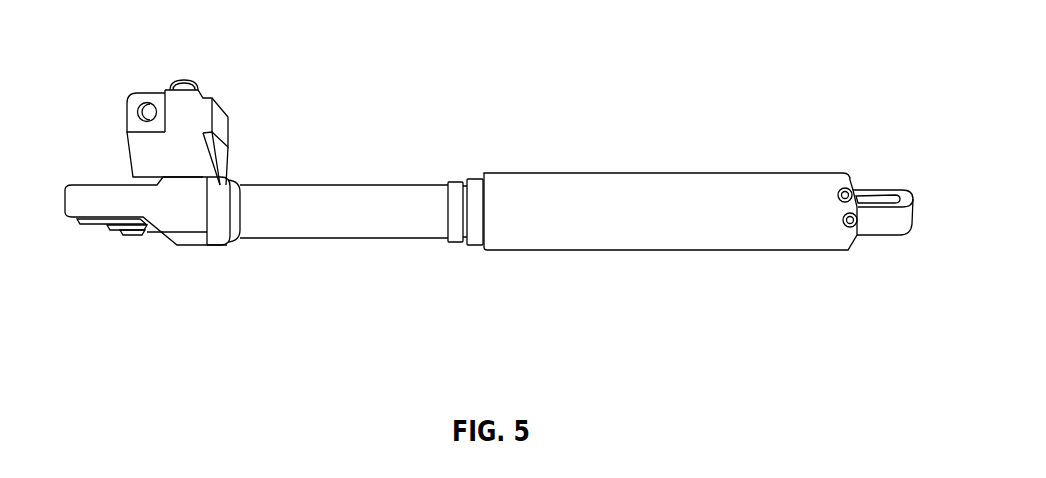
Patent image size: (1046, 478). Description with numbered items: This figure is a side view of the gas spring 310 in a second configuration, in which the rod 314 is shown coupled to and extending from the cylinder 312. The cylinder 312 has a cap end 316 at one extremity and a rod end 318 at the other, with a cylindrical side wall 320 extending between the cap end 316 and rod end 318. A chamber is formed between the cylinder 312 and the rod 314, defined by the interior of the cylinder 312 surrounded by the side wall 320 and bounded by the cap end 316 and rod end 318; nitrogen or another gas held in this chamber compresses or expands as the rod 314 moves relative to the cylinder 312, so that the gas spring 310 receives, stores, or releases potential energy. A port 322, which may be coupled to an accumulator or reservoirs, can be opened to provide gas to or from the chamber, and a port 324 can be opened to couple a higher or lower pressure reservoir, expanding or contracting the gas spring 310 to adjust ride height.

The gas spring 310 is at (616, 126).
The cylinder 312 is at (705, 217).
The rod 314 is at (322, 222).
The cap end 316 is at (863, 256).
The rod end 318 is at (470, 278).
The side wall 320 is at (666, 272).
The port 322 is at (140, 66).
The port 324 is at (850, 188).